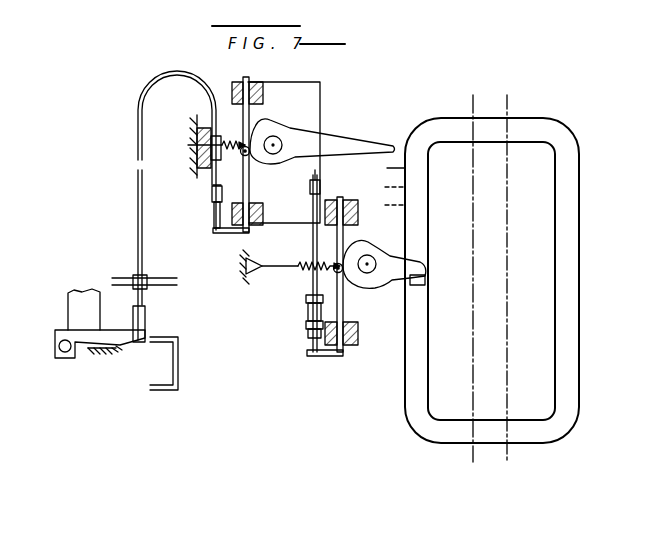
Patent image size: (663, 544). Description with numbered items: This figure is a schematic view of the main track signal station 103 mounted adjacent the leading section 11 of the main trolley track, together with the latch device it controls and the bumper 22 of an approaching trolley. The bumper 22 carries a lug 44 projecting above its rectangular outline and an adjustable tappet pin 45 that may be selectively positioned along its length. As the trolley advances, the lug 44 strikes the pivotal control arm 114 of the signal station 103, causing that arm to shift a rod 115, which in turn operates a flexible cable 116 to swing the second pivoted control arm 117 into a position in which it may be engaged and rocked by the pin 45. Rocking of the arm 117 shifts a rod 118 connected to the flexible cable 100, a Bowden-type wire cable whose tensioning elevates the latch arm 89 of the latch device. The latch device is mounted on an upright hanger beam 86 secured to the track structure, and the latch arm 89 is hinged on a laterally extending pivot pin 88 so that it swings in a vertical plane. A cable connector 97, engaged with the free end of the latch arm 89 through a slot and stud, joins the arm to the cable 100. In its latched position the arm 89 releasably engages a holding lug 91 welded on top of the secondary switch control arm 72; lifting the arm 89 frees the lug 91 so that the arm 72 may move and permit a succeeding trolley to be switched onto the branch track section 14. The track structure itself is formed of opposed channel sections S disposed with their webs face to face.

The leading section of main trolley track 11 is at (515, 459).
The bumper 22 is at (492, 432).
The main track signal station 103 is at (455, 107).
The adjustable tappet pin 45 is at (386, 170).
The lug 44 is at (418, 286).
The flexible cable 100 is at (143, 228).
The rod 118 is at (250, 190).
The second pivoted control arm 117 is at (337, 146).
The flexible cable 116 is at (313, 244).
The rod 115 is at (343, 312).
The pivotal control arm 114 is at (388, 262).
The upright hanger beam 86 is at (68, 305).
The latch arm 89 is at (118, 330).
The pivot pin 88 is at (60, 356).
The cable connector 97 is at (146, 314).
The holding lug 91 is at (98, 356).
The secondary switch control arm 72 is at (116, 355).
The branch track section 14 is at (180, 366).
The channel section S is at (174, 392).